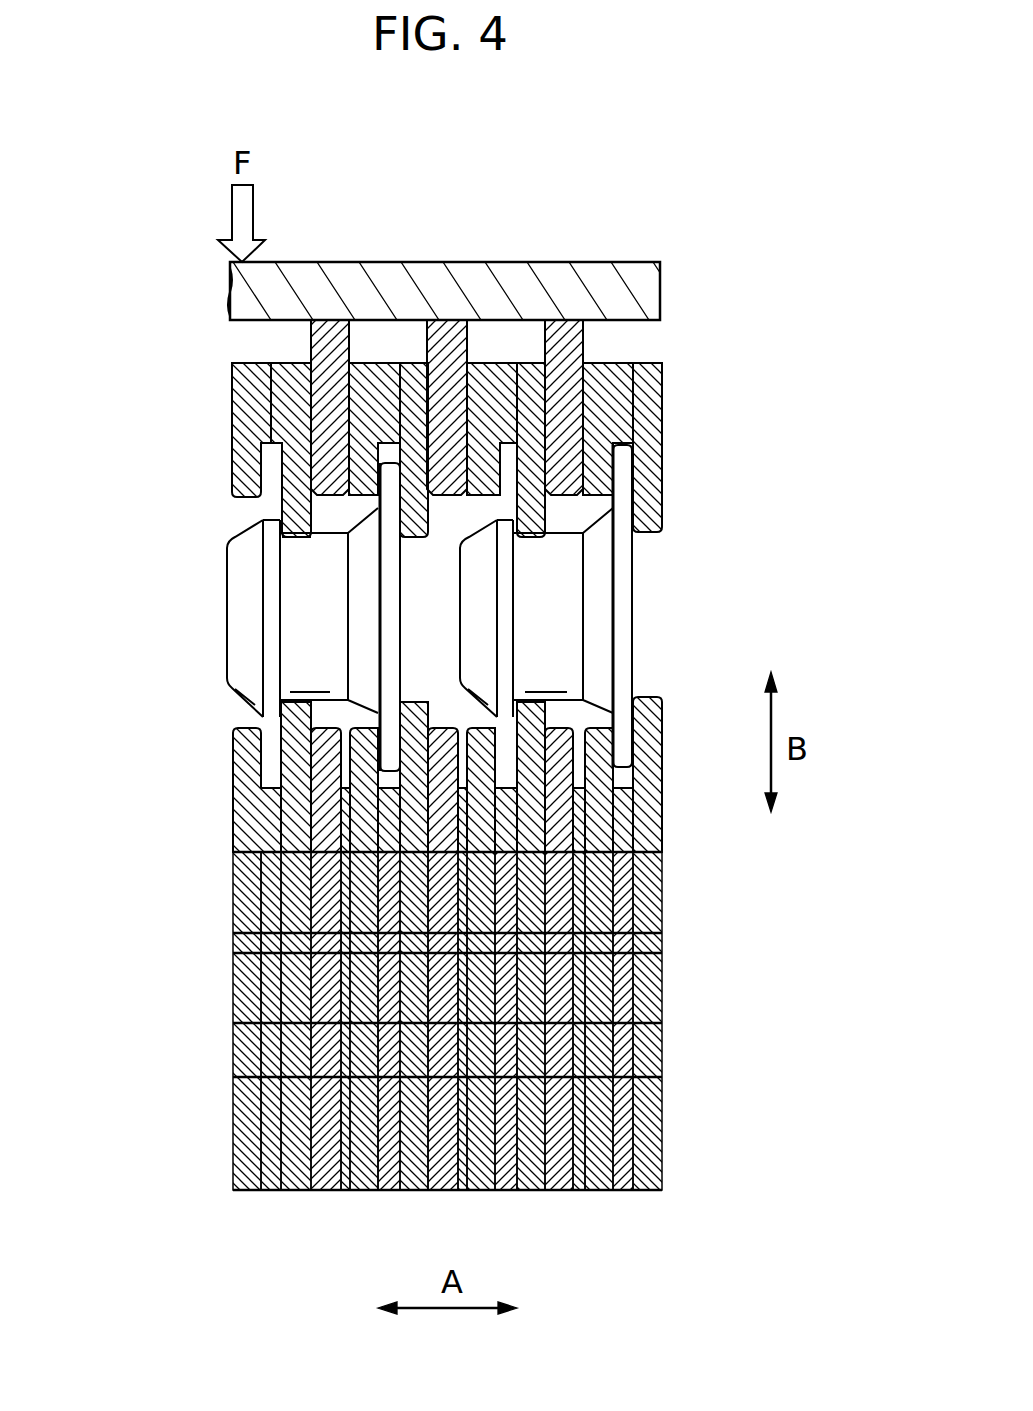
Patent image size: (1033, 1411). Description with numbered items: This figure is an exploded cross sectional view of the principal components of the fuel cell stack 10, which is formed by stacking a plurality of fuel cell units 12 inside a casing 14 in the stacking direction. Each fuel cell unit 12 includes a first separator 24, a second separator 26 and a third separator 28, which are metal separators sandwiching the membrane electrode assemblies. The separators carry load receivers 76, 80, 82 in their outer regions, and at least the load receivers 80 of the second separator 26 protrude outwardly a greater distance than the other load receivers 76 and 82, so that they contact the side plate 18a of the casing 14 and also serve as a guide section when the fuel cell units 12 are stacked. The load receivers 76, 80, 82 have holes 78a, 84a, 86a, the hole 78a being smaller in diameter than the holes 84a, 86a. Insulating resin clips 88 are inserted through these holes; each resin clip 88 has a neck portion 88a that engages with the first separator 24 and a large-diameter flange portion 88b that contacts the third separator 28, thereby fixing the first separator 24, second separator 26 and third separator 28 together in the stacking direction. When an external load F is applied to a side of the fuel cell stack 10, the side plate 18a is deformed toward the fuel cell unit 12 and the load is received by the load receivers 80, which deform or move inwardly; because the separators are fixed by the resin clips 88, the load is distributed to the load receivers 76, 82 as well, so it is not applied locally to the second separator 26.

The fuel cell stack 10 is at (701, 96).
The fuel cell unit 12 is at (513, 492).
The casing 14 is at (661, 258).
The side plate 18a is at (241, 294).
The first separator 24 is at (412, 337).
The second separator 26 is at (449, 302).
The third separator 28 is at (487, 337).
The load receiver 76 is at (294, 337).
The hole 78a is at (300, 537).
The load receiver 80 is at (331, 302).
The load receiver 82 is at (369, 337).
The hole 84a is at (345, 535).
The hole 86a is at (370, 497).
The resin clip 88 is at (371, 608).
The neck portion 88a is at (246, 640).
The flange portion 88b is at (390, 547).